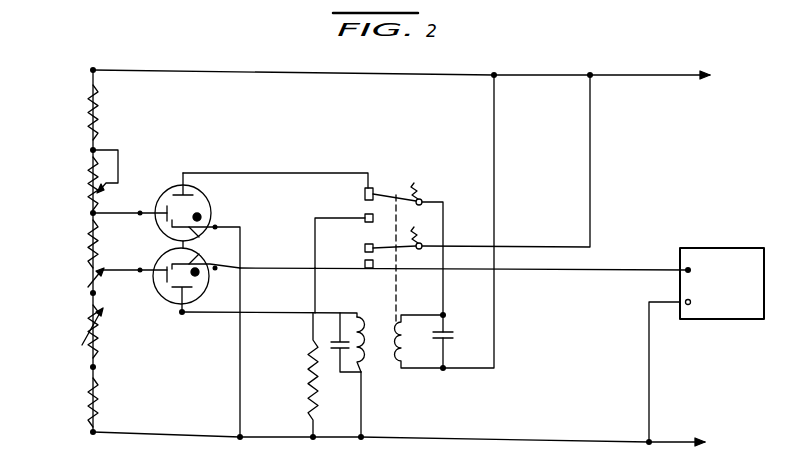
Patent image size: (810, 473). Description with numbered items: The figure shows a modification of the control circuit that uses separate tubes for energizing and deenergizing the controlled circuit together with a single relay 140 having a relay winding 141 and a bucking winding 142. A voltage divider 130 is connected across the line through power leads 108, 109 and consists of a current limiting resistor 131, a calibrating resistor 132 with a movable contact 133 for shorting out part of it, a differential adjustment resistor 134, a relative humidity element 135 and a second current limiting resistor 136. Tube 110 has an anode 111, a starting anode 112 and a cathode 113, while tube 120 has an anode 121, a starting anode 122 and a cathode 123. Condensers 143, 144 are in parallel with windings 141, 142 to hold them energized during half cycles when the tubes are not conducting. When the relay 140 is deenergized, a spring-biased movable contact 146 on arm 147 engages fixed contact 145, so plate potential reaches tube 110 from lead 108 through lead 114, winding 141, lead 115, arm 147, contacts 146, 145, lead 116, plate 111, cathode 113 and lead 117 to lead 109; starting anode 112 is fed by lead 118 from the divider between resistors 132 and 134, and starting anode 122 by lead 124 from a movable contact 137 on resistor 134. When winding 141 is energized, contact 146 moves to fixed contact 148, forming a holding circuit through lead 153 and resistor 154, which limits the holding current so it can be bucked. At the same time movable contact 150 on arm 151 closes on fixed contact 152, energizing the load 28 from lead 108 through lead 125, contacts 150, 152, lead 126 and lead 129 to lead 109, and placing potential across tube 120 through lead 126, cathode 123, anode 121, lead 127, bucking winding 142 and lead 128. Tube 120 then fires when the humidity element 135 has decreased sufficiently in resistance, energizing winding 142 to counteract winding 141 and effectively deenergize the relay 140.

The load 28 is at (731, 248).
The power lead 108 is at (633, 75).
The power lead 109 is at (617, 441).
The tube 110 is at (208, 196).
The anode 111 is at (177, 187).
The starting anode 112 is at (151, 227).
The cathode 113 is at (200, 233).
The lead 114 is at (494, 184).
The lead 115 is at (443, 227).
The lead 116 is at (277, 173).
The lead 117 is at (240, 357).
The lead 118 is at (113, 216).
The tube 120 is at (172, 282).
The anode 121 is at (197, 297).
The starting anode 122 is at (160, 280).
The cathode 123 is at (198, 268).
The lead 124 is at (111, 270).
The lead 125 is at (590, 190).
The lead 126 is at (268, 267).
The lead 127 is at (248, 312).
The lead 128 is at (361, 412).
The lead 129 is at (649, 357).
The voltage divider 130 is at (170, 128).
The current limiting resistor 131 is at (98, 92).
The calibrating resistor 132 is at (93, 196).
The movable contact 133 is at (106, 188).
The differential adjustment resistor 134 is at (93, 252).
The relative humidity element 135 is at (100, 344).
The current limiting resistor 136 is at (99, 410).
The movable contact 137 is at (90, 284).
The relay 140 is at (380, 303).
The relay winding 141 is at (398, 345).
The bucking winding 142 is at (366, 365).
The condenser 143 is at (446, 330).
The condenser 144 is at (339, 362).
The fixed contact 145 is at (377, 190).
The movable contact 146 is at (365, 193).
The arm 147 is at (413, 260).
The fixed contact 148 is at (365, 218).
The movable contact 150 is at (365, 248).
The arm 151 is at (409, 248).
The fixed contact 152 is at (365, 264).
The lead 153 is at (315, 287).
The resistor 154 is at (311, 385).